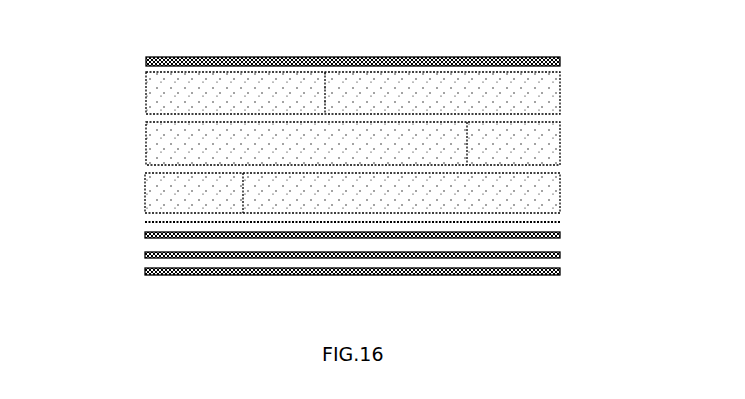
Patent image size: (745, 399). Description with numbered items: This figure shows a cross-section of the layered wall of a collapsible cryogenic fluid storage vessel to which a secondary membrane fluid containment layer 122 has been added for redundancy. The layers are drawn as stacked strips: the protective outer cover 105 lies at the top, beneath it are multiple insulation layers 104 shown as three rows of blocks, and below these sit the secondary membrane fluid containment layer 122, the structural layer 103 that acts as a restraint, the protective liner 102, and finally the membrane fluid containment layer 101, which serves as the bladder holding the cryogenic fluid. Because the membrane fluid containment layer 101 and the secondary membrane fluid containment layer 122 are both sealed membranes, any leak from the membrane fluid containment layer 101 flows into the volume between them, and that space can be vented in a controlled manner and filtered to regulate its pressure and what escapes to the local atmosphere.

The membrane fluid containment layer 101 is at (565, 273).
The protective liner 102 is at (565, 257).
The structural layer 103 is at (565, 235).
The insulation layers 104 is at (562, 205).
The protective outer cover 105 is at (562, 60).
The secondary membrane fluid containment layer 122 is at (142, 222).